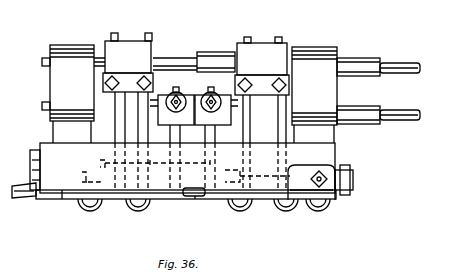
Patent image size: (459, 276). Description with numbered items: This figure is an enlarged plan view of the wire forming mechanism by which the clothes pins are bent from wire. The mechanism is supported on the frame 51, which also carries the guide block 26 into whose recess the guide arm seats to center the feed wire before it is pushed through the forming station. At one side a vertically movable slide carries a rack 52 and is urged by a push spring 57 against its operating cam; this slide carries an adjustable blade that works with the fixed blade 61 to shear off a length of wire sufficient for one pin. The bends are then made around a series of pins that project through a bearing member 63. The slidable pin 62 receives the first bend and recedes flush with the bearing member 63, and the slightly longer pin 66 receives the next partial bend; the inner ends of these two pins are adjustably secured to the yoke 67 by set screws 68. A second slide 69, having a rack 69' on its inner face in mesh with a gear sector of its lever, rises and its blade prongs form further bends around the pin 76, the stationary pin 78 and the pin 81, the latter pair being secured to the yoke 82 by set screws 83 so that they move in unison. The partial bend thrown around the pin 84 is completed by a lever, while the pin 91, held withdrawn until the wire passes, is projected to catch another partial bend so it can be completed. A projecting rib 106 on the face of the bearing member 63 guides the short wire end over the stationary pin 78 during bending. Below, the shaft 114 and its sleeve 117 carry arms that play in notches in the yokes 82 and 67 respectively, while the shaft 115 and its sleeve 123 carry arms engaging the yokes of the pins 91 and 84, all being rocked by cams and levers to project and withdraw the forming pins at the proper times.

The guide block 26 is at (18, 198).
The frame 51 is at (336, 143).
The rack 52 is at (290, 168).
The push spring 57 is at (312, 179).
The fixed blade 61 is at (326, 200).
The slidable pin 62 is at (279, 37).
The bearing member 63 is at (62, 199).
The pin 66 is at (247, 37).
The yoke 67 is at (300, 44).
The set screws 68 is at (262, 109).
The slide 69 is at (86, 173).
The rack 69' is at (149, 157).
The pin 76 is at (112, 38).
The stationary pin 78 is at (197, 199).
The pin 81 is at (150, 38).
The yoke 82 is at (123, 53).
The set screws 83 is at (128, 108).
The pin 84 is at (211, 88).
The pin 91 is at (178, 88).
The projecting rib 106 is at (186, 199).
The shaft 114 is at (406, 63).
The shaft 115 is at (412, 110).
The sleeve 117 is at (364, 58).
The sleeve 123 is at (366, 106).